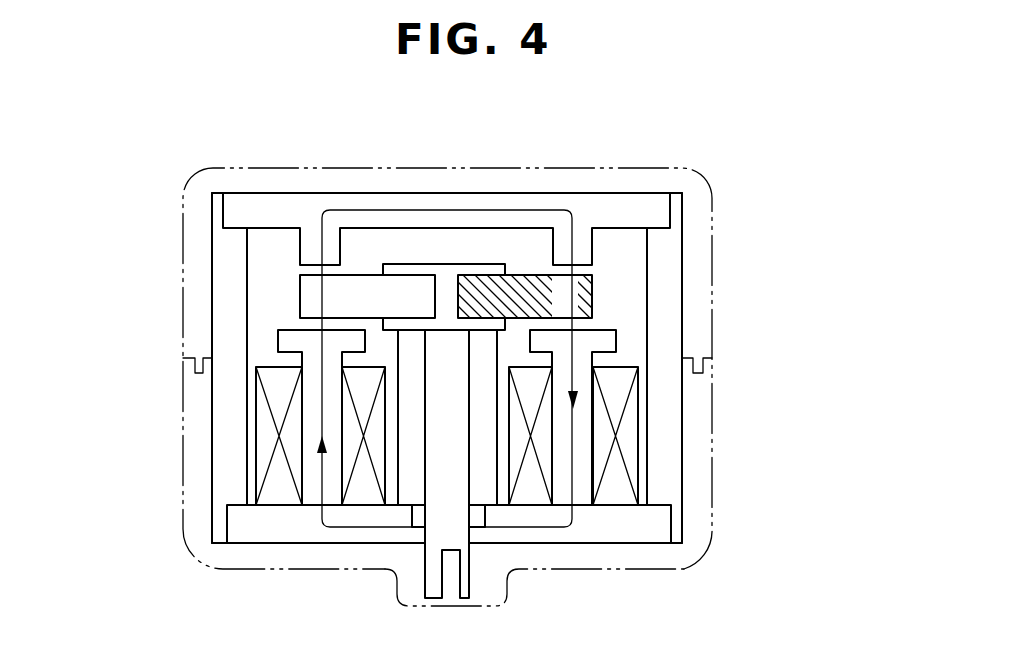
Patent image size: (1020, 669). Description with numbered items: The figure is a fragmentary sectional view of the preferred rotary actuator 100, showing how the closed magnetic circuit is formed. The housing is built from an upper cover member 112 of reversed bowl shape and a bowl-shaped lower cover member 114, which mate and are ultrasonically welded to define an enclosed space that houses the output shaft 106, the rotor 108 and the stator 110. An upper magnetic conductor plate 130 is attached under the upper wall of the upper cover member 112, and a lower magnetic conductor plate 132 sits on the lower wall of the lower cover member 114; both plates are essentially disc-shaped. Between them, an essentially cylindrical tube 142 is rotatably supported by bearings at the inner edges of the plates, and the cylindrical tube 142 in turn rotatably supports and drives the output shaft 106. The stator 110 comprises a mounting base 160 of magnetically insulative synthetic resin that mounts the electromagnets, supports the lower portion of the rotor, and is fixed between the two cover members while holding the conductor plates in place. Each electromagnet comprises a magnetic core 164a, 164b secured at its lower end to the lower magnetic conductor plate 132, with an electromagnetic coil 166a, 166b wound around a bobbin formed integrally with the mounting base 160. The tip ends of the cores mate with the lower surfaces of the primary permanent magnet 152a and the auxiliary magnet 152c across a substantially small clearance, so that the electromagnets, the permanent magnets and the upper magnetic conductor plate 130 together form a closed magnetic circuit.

The rotary actuator 100 is at (742, 200).
The output shaft 106 is at (442, 535).
The rotor 108 is at (514, 252).
The stator 110 is at (231, 455).
The upper cover member 112 is at (693, 168).
The lower cover member 114 is at (678, 558).
The upper magnetic conductor plate 130 is at (598, 210).
The lower magnetic conductor plate 132 is at (603, 530).
The cylindrical tube 142 is at (408, 486).
The primary permanent magnet 152a is at (592, 293).
The auxiliary magnet 152c is at (300, 296).
The mounting base 160 is at (222, 306).
The magnetic core 164a is at (582, 433).
The magnetic core 164b is at (312, 392).
The electromagnetic coil 166a is at (632, 457).
The electromagnetic coil 166b is at (272, 476).